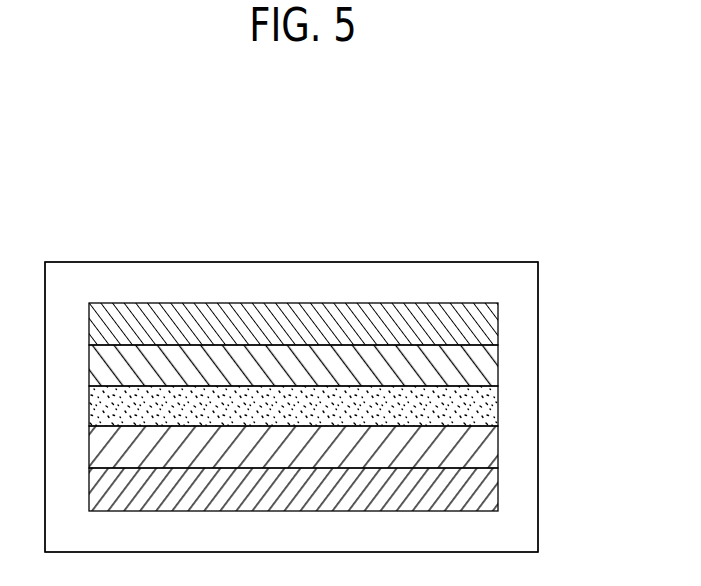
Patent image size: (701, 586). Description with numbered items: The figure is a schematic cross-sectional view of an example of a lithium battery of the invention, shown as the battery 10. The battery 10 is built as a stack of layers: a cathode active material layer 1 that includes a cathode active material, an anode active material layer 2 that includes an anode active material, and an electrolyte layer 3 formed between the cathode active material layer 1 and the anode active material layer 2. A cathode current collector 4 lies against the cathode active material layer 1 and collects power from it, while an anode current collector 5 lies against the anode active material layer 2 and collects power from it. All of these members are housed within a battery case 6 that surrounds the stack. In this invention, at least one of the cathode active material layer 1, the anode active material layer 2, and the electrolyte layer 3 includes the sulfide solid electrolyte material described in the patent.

The battery 10 is at (506, 215).
The battery case 6 is at (518, 280).
The cathode current collector 4 is at (498, 314).
The cathode active material layer 1 is at (498, 355).
The electrolyte layer 3 is at (498, 397).
The anode active material layer 2 is at (498, 439).
The anode current collector 5 is at (498, 479).